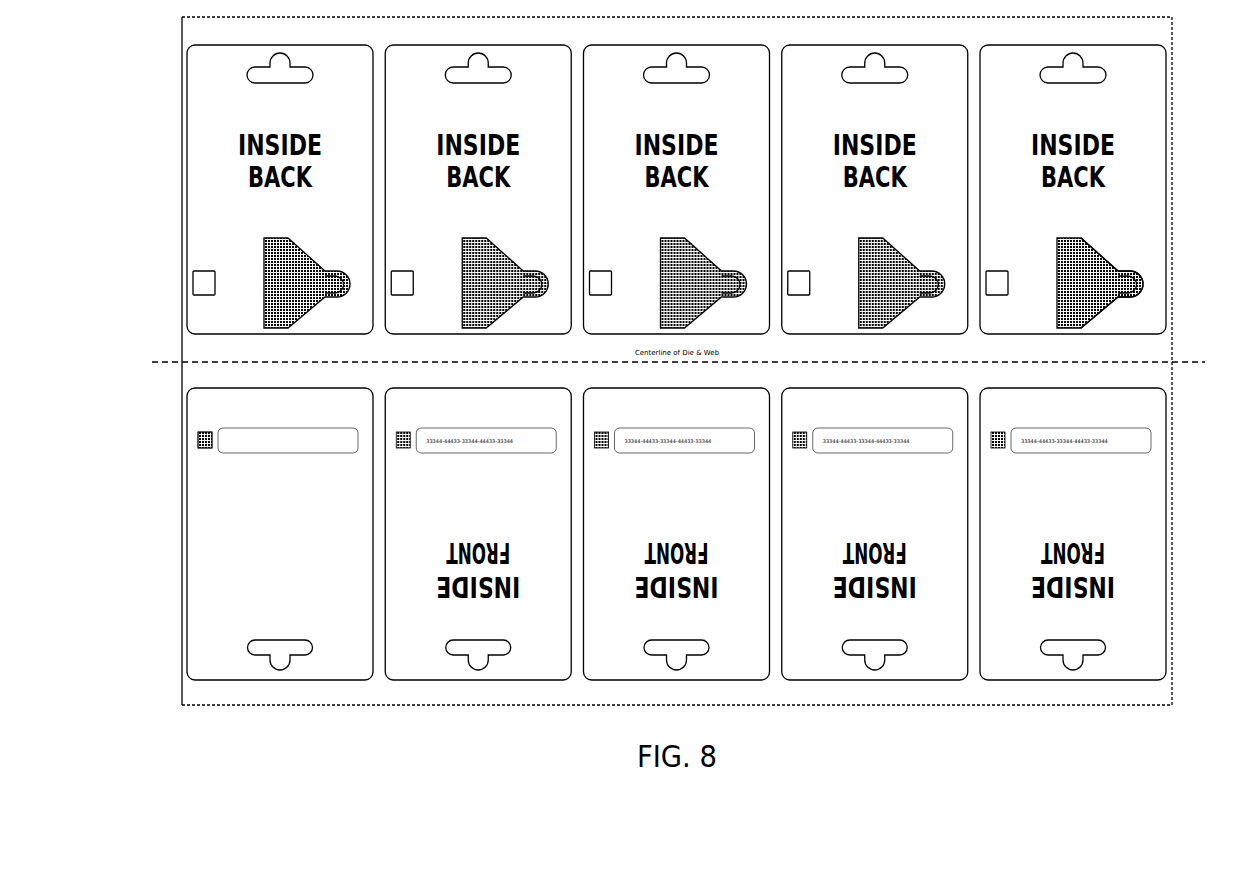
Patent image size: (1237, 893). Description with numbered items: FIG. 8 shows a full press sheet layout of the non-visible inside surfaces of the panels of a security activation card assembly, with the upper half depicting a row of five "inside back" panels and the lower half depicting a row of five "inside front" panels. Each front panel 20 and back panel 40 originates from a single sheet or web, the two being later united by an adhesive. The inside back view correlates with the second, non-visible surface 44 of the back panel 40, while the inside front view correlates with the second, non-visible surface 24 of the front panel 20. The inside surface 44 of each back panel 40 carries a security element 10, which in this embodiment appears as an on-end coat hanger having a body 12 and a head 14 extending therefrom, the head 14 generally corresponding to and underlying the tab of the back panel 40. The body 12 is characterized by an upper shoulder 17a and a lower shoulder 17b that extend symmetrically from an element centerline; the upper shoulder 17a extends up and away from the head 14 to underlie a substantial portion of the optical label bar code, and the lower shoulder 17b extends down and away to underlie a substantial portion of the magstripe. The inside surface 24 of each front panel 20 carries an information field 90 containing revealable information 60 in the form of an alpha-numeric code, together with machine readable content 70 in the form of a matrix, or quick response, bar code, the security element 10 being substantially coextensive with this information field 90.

The security element 10 is at (909, 245).
The body 12 is at (1083, 284).
The head 14 is at (1174, 265).
The upper shoulder 17a is at (1122, 227).
The lower shoulder 17b is at (1121, 317).
The first panel 20 is at (253, 534).
The second surface of first panel 24 is at (280, 534).
The second panel 40 is at (253, 189).
The second surface of second panel 44 is at (351, 114).
The revealable information 60 is at (288, 425).
The machine readable content 70 is at (215, 463).
The information field 90 is at (269, 447).